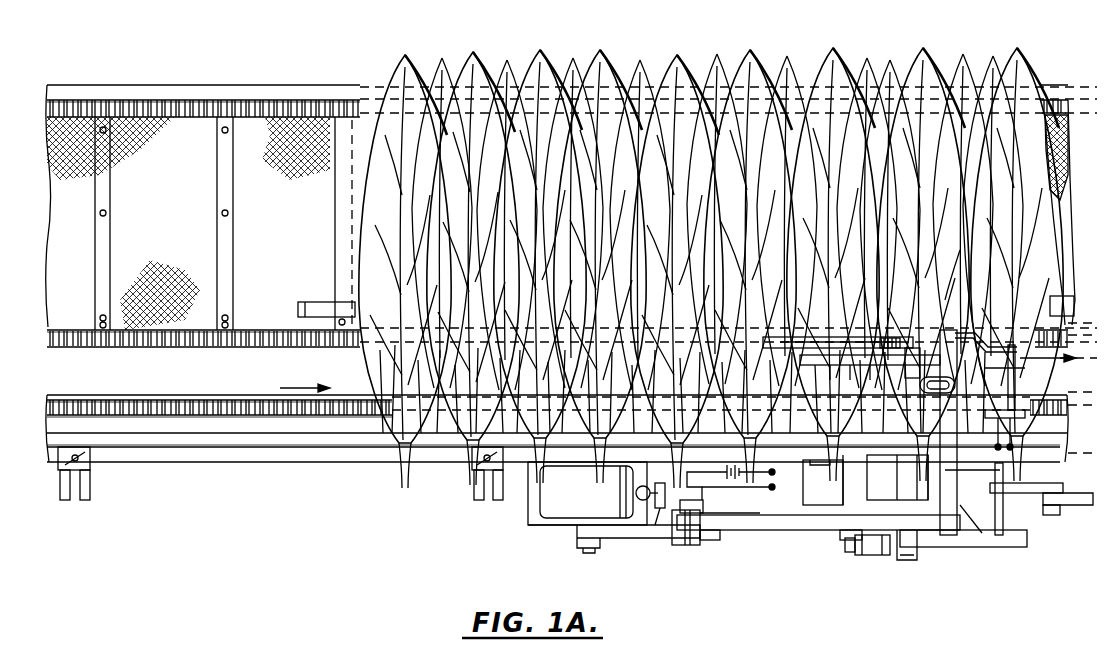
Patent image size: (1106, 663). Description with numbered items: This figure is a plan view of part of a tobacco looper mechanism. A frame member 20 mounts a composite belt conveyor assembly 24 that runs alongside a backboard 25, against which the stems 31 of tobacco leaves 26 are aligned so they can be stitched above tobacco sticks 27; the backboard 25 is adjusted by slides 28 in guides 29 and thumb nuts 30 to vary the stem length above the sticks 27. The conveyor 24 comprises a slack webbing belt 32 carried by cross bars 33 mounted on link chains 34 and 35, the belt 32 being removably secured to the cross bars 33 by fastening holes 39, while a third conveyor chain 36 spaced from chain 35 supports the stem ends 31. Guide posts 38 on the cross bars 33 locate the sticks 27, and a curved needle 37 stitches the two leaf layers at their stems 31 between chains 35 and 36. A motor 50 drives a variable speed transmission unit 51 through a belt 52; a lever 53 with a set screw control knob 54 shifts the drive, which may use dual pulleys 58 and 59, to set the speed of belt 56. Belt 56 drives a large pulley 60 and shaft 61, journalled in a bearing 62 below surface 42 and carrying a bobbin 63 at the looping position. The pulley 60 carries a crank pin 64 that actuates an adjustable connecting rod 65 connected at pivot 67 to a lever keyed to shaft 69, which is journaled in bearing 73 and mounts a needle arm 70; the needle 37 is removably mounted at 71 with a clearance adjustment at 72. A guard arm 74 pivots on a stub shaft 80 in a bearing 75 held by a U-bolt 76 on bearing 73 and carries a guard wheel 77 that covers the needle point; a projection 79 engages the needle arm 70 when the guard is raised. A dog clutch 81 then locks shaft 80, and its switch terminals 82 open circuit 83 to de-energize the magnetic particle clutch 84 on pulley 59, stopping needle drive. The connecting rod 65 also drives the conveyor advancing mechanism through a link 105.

The frame member 20 is at (360, 455).
The composite belt conveyor assembly 24 is at (140, 384).
The backboard 25 is at (300, 462).
The tobacco leaves 26 is at (360, 225).
The tobacco sticks 27 is at (305, 302).
The slides 28 is at (92, 470).
The guides 29 is at (91, 495).
The thumb nuts 30 is at (70, 458).
The stem 31 is at (372, 422).
The belt 32 is at (185, 265).
The cross bars 33 is at (228, 160).
The link chain 34 is at (154, 100).
The link chain 35 is at (205, 345).
The third conveyor chain 36 is at (233, 398).
The curved needle 37 is at (818, 340).
The guide posts 38 is at (345, 310).
The fastening holes 39 is at (222, 131).
The surface 42 is at (236, 92).
The motor 50 is at (565, 500).
The variable speed transmission unit 51 is at (680, 540).
The belt 52 is at (615, 540).
The lever 53 is at (660, 512).
The set screw control knob 54 is at (645, 493).
The belt 56 is at (758, 531).
The dual pulley 58 is at (712, 540).
The pulley 59 is at (722, 516).
The large pulley 60 is at (798, 531).
The shaft 61 is at (843, 538).
The bearing 62 is at (845, 482).
The bobbin 63 is at (868, 340).
The crank pin 64 is at (872, 556).
The connecting rod 65 is at (855, 548).
The pivot 67 is at (908, 560).
The shaft 69 is at (925, 285).
The needle arm 70 is at (897, 477).
The needle mounting 71 is at (830, 366).
The needle adjustment 72 is at (918, 383).
The bearing 73 is at (950, 477).
The guard arm 74 is at (913, 337).
The bearing 75 is at (1020, 370).
The U-bolt 76 is at (952, 420).
The guard wheel 77 is at (776, 340).
The projection 79 is at (916, 477).
The stub shaft 80 is at (1010, 345).
The dog clutch 81 is at (1015, 425).
The terminals 82 is at (775, 474).
The circuit 83 is at (773, 490).
The magnetic particle clutch 84 is at (700, 505).
The link 105 is at (1082, 508).